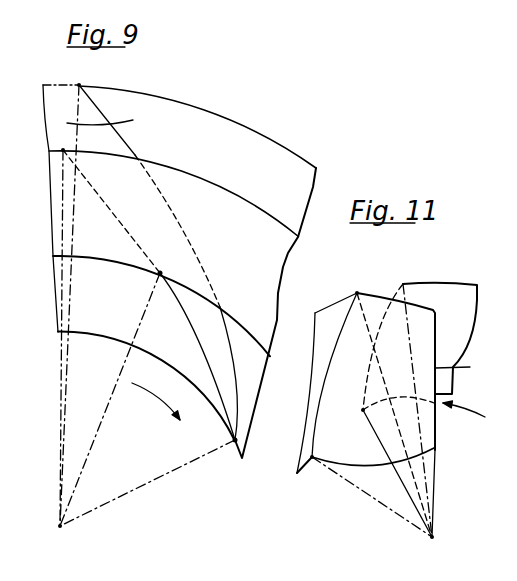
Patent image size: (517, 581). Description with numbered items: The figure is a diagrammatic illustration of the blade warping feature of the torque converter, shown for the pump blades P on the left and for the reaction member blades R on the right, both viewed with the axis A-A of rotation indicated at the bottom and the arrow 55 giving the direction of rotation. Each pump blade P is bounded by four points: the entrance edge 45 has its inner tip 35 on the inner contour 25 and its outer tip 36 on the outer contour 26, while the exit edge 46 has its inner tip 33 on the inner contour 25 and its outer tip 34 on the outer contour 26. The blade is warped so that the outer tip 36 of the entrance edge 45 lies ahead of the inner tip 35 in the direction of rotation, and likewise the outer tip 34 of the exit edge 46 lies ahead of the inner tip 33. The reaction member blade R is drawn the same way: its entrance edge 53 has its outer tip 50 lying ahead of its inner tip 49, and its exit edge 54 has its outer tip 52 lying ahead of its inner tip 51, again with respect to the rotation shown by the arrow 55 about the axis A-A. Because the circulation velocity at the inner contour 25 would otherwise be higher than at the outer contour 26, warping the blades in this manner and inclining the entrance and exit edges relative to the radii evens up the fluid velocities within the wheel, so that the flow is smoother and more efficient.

In FIG. 9, the inner contour 25 is at (223, 188).
In FIG. 11, the inner contour 25 is at (448, 284).
In FIG. 9, the outer contour 26 is at (302, 158).
In FIG. 11, the outer contour 26 is at (296, 472).
In FIG. 9, the inner tip of pump blade exit edge 33 is at (63, 150).
In FIG. 9, the outer tip of pump blade exit edge 34 is at (79, 85).
In FIG. 9, the inner tip of pump blade entrance edge 35 is at (158, 274).
In FIG. 9, the outer tip of pump blade entrance edge 36 is at (235, 443).
In FIG. 9, the entrance edge of pump blade 45 is at (183, 313).
In FIG. 9, the exit edge of pump blade 46 is at (114, 125).
In FIG. 11, the inner tip of reaction blade entrance edge 49 is at (357, 292).
In FIG. 11, the outer tip of reaction blade entrance edge 50 is at (312, 459).
In FIG. 11, the inner tip of reaction blade exit edge 51 is at (404, 283).
In FIG. 11, the outer tip of reaction blade exit edge 52 is at (363, 410).
In FIG. 11, the entrance edge of reaction member blade 53 is at (337, 338).
In FIG. 11, the exit edge of reaction member blade 54 is at (391, 306).
In FIG. 9, the arrow indicating direction of rotation 55 is at (153, 402).
In FIG. 11, the arrow indicating direction of rotation 55 is at (465, 410).
In FIG. 9, the pump blades P is at (228, 377).
In FIG. 11, the reaction member blades R is at (461, 367).
In FIG. 9, the axis A-A is at (55, 537).
In FIG. 11, the axis A-A is at (431, 547).